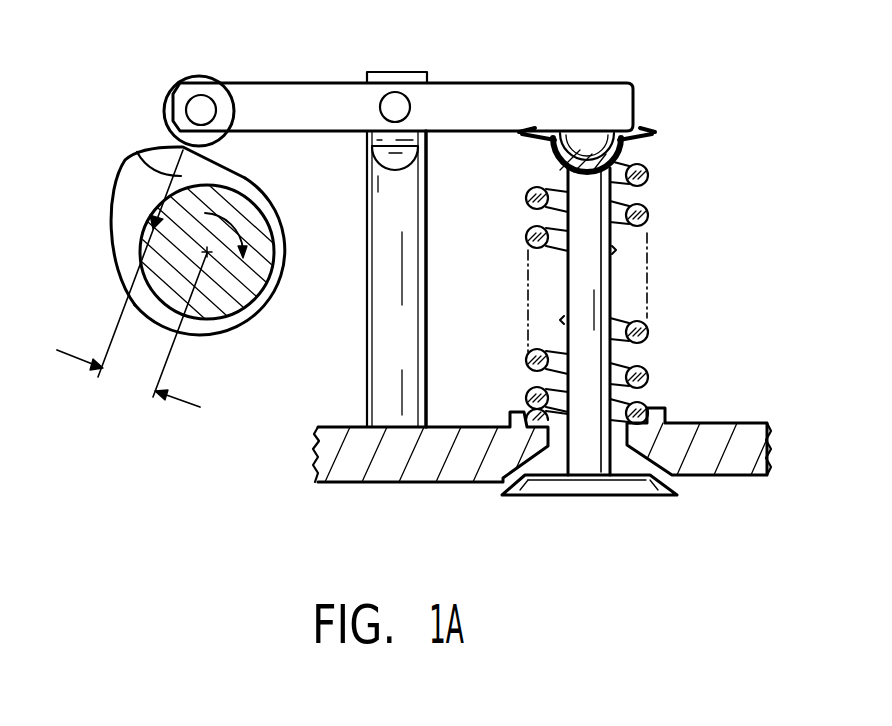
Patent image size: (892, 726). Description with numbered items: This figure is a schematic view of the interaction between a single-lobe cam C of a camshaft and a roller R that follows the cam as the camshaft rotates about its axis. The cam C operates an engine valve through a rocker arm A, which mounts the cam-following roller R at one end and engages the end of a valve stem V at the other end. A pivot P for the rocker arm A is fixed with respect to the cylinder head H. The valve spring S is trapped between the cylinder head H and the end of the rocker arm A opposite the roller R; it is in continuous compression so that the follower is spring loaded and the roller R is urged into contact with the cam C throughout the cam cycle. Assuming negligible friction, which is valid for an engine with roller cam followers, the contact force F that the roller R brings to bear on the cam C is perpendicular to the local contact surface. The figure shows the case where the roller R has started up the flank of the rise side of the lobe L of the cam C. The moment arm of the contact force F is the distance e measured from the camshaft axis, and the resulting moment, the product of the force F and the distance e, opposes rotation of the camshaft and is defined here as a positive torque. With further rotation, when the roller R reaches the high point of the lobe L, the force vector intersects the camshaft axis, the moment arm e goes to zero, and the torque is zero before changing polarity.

The roller R is at (206, 75).
The rocker arm A is at (298, 82).
The pivot P is at (395, 107).
The contact force F is at (148, 162).
The lobe L is at (128, 181).
The cam C is at (117, 229).
The moment arm e is at (132, 278).
The valve spring S is at (650, 216).
The valve stem V is at (608, 300).
The cylinder head H is at (707, 423).